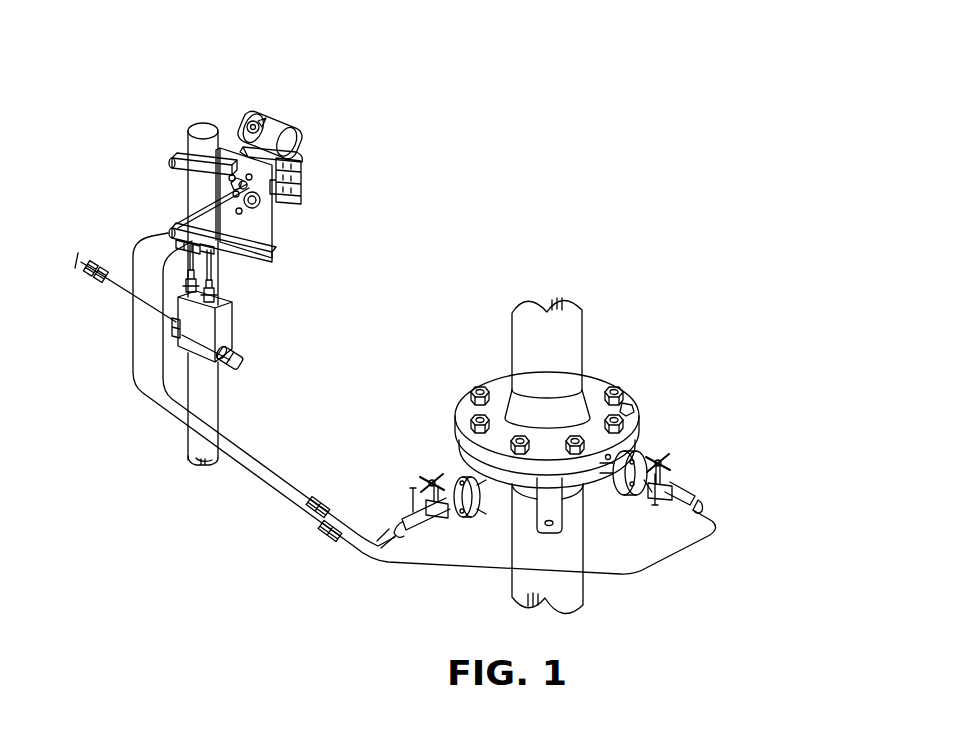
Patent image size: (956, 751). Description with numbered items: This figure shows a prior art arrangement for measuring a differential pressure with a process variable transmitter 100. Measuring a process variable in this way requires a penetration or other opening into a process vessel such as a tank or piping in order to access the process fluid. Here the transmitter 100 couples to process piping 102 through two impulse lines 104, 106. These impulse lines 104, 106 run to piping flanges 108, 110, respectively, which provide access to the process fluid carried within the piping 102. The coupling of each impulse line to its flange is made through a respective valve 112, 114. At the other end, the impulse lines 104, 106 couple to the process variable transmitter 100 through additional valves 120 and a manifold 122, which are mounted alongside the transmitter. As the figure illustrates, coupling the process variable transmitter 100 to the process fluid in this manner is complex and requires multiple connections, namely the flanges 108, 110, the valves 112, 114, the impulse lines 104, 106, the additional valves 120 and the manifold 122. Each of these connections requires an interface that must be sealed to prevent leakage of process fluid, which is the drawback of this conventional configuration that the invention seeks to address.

The process variable transmitter 100 is at (285, 103).
The process piping 102 is at (568, 340).
The impulse line 104 is at (260, 463).
The impulse line 106 is at (235, 463).
The piping flange 108 is at (590, 495).
The piping flange 110 is at (612, 373).
The valve 112 is at (435, 480).
The valve 114 is at (675, 478).
The additional valves 120 is at (157, 235).
The manifold 122 is at (291, 187).